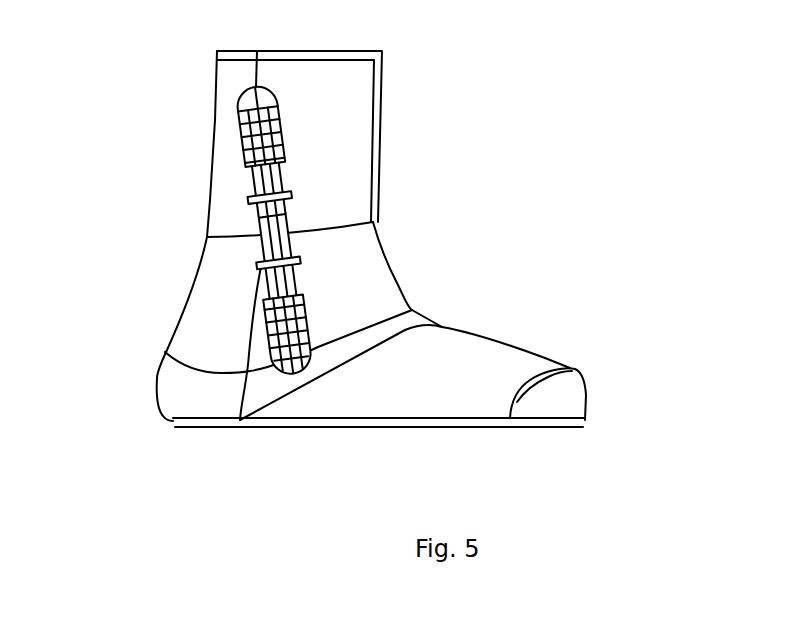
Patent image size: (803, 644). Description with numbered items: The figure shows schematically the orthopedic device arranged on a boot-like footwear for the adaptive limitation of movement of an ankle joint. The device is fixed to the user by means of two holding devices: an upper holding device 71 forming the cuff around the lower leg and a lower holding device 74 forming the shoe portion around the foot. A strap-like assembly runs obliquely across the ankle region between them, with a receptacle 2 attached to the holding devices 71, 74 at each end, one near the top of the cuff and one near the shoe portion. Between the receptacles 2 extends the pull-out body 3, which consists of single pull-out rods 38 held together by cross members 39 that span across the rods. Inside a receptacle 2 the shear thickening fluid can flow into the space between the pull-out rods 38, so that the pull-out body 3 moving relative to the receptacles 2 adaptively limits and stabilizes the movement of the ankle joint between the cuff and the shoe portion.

The receptacle 2 is at (251, 230).
The pull-out body 3 is at (262, 254).
The pull-out rods 38 is at (258, 224).
The cross members 39 is at (250, 197).
The holding device 71 is at (353, 90).
The holding device 74 is at (405, 330).